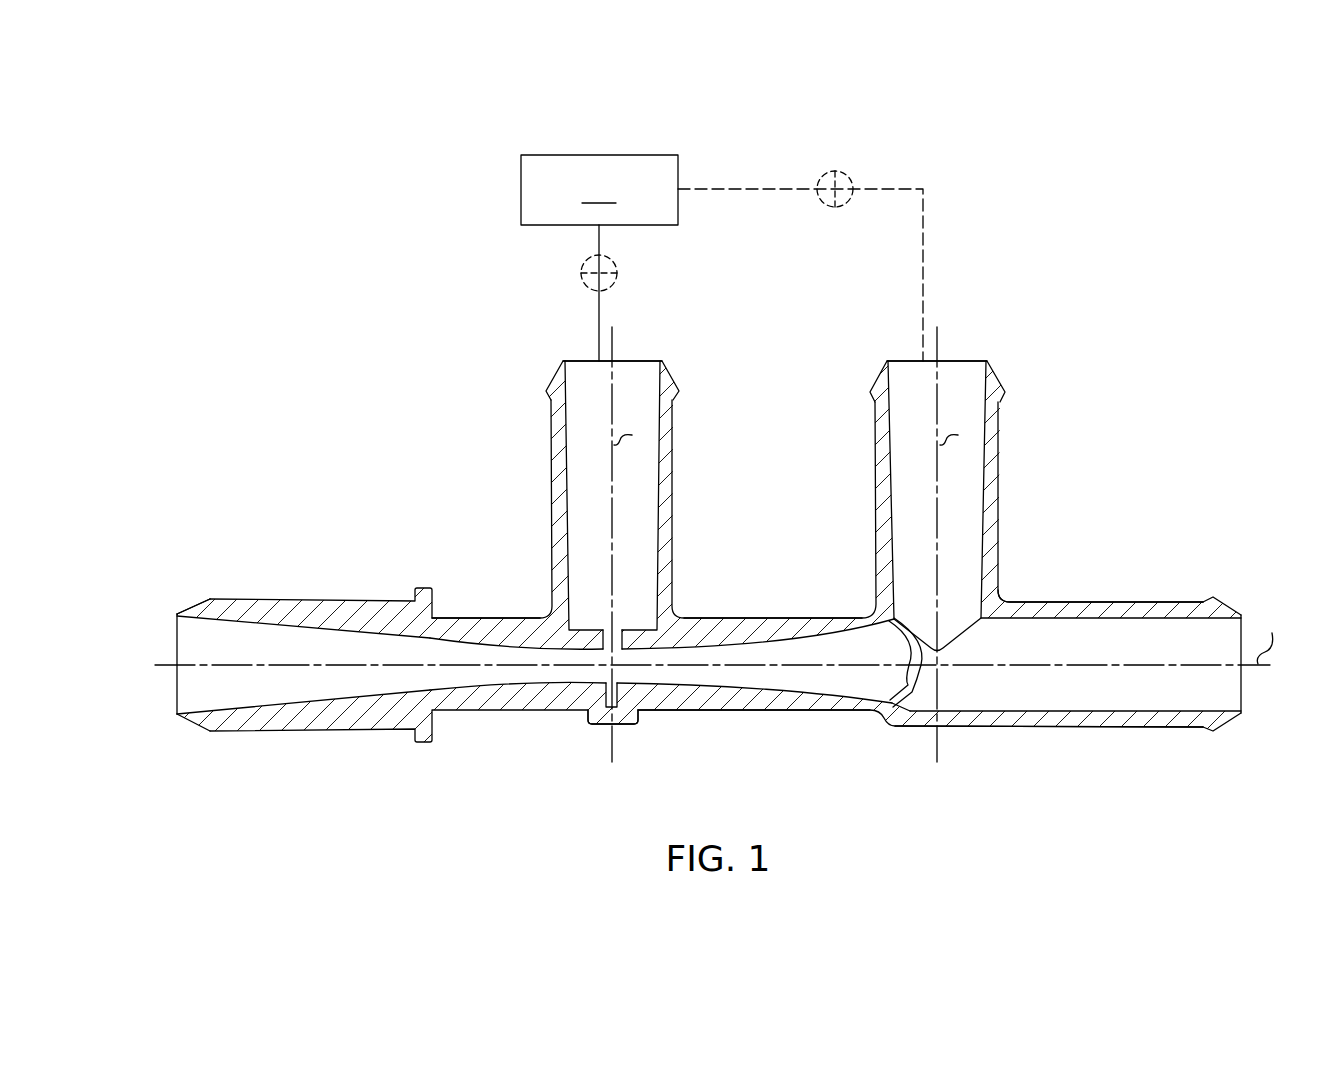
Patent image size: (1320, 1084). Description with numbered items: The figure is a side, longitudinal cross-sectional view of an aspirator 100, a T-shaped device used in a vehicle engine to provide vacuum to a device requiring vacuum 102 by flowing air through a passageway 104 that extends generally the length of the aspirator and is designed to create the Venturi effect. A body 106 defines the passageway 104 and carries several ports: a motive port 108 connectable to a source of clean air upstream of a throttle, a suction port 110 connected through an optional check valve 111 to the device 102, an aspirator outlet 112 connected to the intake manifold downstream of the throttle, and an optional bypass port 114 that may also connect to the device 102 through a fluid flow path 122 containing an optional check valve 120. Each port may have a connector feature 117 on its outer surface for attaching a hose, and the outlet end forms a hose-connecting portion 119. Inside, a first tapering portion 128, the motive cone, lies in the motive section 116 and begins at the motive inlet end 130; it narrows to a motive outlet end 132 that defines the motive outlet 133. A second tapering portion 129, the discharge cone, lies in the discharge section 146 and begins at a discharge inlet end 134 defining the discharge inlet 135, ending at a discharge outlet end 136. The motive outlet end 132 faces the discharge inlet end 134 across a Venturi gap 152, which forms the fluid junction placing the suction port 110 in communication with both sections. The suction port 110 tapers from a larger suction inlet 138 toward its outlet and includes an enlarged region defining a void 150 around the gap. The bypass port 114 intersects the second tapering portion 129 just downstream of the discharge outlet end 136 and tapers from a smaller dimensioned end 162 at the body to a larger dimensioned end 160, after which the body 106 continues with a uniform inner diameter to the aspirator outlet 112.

The aspirator 100 is at (323, 367).
The device requiring vacuum 102 is at (599, 190).
The passageway 104 is at (356, 684).
The body 106 is at (497, 623).
The motive port 108 is at (186, 691).
The suction port 110 is at (548, 499).
The check valve 111 is at (618, 273).
The aspirator outlet 112 is at (1238, 692).
The bypass port 114 is at (1001, 527).
The motive section 116 is at (345, 624).
The connector feature 117 is at (209, 597).
The hose-connecting portion 119 is at (1243, 585).
The check valve 120 is at (835, 171).
The fluid flow path 122 is at (923, 240).
The first tapering portion 128 is at (282, 699).
The second tapering portion 129 is at (773, 682).
The motive inlet end 130 is at (198, 639).
The motive outlet end 132 is at (595, 634).
The motive outlet 133 is at (604, 682).
The discharge inlet end 134 is at (630, 637).
The discharge inlet 135 is at (636, 712).
The discharge outlet end 136 is at (910, 682).
The suction inlet 138 is at (578, 360).
The discharge section 146 is at (781, 628).
The void 150 is at (638, 620).
The Venturi gap 152 is at (625, 658).
The larger dimensioned end 160 is at (900, 360).
The smaller dimensioned end 162 is at (998, 600).